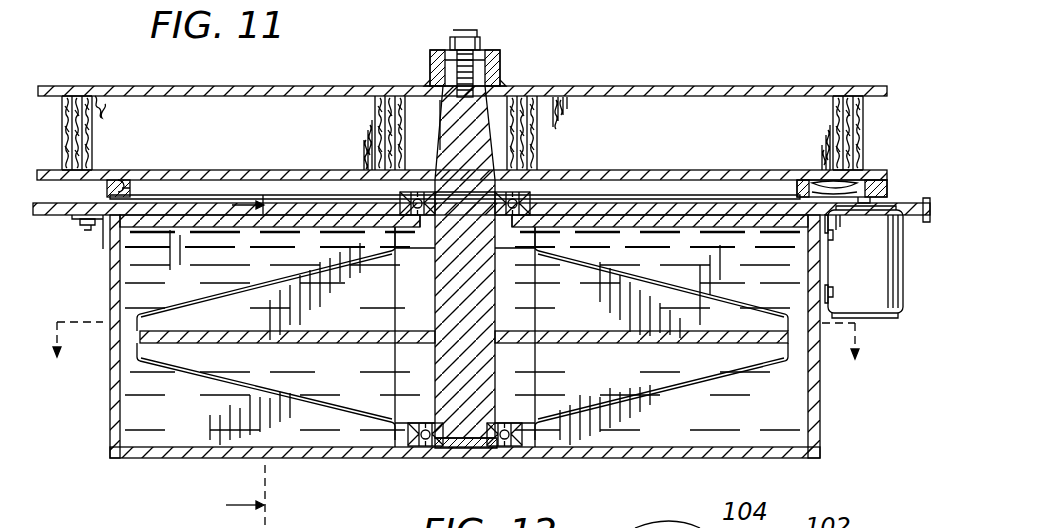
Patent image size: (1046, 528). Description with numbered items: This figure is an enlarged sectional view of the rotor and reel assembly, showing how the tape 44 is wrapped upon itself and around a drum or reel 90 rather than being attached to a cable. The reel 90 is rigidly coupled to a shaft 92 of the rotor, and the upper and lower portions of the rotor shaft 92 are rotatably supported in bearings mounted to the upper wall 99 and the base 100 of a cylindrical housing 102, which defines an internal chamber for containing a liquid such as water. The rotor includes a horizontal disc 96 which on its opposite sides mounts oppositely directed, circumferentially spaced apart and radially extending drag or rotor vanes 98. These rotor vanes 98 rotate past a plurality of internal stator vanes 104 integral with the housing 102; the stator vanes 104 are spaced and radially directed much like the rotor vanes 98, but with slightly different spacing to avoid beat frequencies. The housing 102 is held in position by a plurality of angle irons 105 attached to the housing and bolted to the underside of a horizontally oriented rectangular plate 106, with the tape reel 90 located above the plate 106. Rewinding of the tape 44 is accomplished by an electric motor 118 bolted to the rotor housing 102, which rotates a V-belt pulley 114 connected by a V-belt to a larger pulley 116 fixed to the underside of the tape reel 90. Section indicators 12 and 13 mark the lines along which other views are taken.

The tape 44 is at (862, 116).
The reel 90 is at (690, 87).
The shaft 92 is at (480, 123).
The horizontal disc 96 is at (520, 340).
The rotor vanes 98 is at (198, 310).
The upper wall 99 is at (308, 178).
The base 100 is at (334, 458).
The cylindrical housing 102 is at (160, 462).
The stator vanes 104 is at (126, 276).
The angle irons 105 is at (102, 250).
The rectangular plate 106 is at (52, 215).
The V-belt pulley 114 is at (862, 178).
The larger pulley 116 is at (140, 177).
The electric motor 118 is at (873, 300).
The section line 12- 12 is at (226, 359).
The section line 13- 13 is at (457, 359).